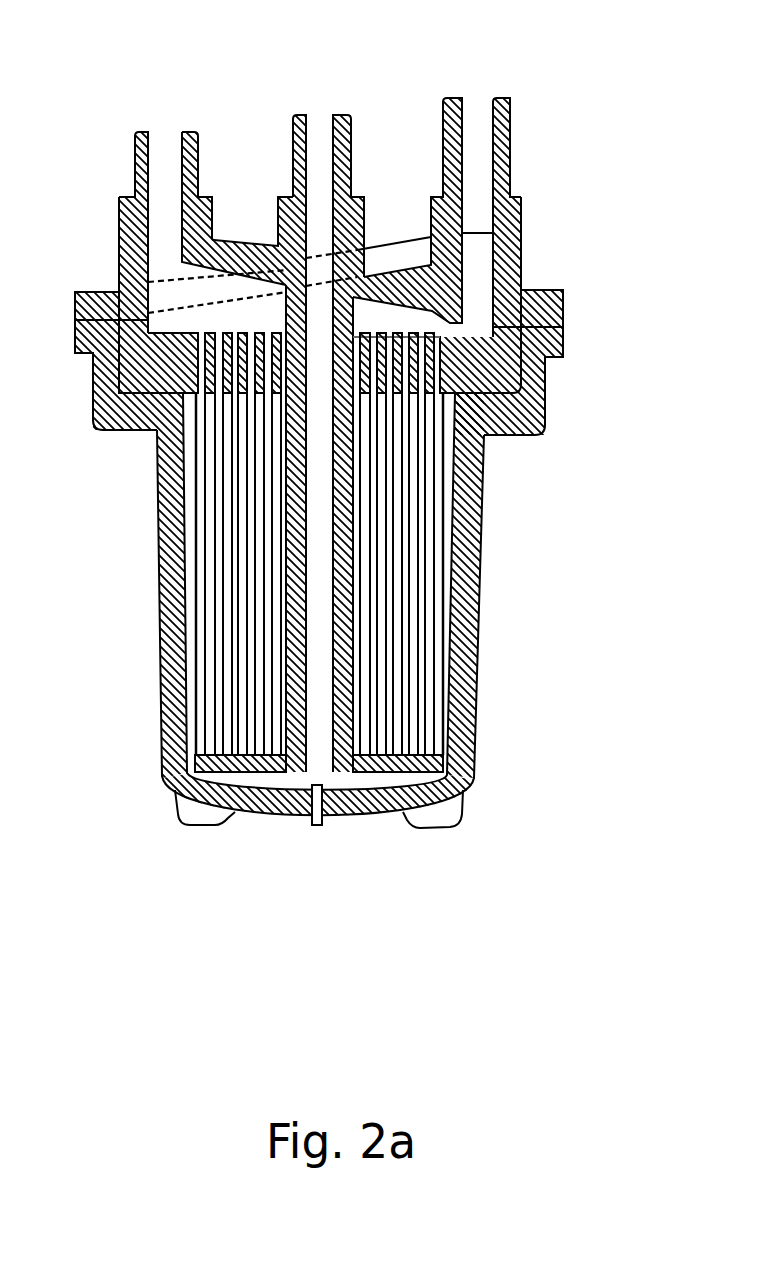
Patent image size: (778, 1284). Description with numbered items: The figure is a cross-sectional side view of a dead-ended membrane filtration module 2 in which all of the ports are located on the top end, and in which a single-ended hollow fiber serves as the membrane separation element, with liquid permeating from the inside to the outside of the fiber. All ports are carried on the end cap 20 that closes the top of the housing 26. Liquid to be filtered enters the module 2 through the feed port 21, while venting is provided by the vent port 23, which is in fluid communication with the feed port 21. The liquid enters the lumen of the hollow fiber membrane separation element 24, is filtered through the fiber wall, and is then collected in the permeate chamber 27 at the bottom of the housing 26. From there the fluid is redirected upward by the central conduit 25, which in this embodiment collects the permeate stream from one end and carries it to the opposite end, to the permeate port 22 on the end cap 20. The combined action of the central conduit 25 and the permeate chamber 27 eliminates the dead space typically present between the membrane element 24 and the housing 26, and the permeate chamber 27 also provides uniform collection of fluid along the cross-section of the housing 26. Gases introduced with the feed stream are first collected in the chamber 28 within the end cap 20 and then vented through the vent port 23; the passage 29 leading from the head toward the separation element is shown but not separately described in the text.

The module 2 is at (505, 529).
The end cap 20 is at (535, 263).
The feed port 21 is at (455, 97).
The permeate port 22 is at (298, 113).
The vent port 23 is at (138, 124).
The hollow fiber membrane separation element 24 is at (235, 546).
The central conduit 25 is at (285, 677).
The housing 26 is at (384, 815).
The permeate chamber 27 is at (362, 777).
The chamber 28 is at (165, 257).
The outlet channel 29 is at (403, 318).